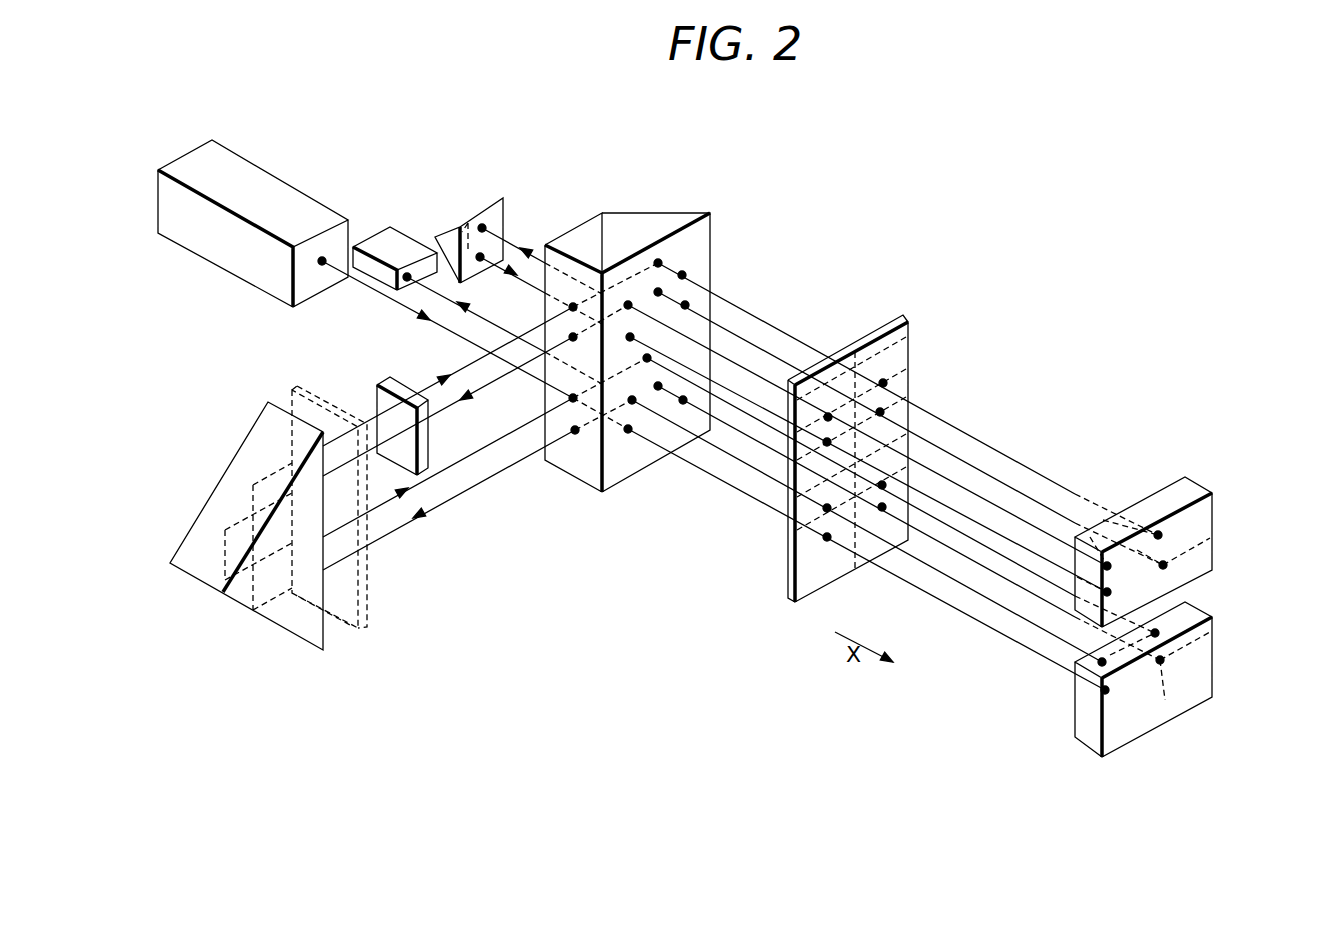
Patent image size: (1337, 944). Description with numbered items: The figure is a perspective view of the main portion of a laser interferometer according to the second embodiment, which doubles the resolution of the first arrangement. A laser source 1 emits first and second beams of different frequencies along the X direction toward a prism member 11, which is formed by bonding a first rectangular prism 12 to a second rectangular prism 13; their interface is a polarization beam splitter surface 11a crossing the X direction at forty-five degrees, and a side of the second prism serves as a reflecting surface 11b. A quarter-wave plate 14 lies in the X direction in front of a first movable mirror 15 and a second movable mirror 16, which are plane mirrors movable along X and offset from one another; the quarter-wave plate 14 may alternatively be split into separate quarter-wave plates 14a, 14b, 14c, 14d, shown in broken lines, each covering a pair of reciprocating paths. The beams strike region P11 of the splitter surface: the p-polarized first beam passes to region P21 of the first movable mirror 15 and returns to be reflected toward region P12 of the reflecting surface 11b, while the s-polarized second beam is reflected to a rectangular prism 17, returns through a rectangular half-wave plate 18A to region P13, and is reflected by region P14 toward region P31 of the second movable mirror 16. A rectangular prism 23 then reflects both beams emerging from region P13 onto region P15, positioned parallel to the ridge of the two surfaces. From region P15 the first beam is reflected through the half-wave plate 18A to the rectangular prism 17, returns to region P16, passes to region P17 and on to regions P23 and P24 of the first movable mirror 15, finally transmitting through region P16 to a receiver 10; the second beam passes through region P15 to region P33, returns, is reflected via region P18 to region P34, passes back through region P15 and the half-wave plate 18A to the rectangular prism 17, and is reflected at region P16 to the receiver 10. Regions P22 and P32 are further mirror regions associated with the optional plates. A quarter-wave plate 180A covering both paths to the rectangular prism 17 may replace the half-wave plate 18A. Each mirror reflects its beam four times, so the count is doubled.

The laser source 1 is at (248, 283).
The receiver 10 is at (393, 227).
The rectangular prism 23 is at (490, 207).
The prism member 11 is at (676, 337).
The first rectangular prism 12 is at (565, 250).
The second rectangular prism 13 is at (645, 230).
The polarization beam splitter surface 11a is at (602, 485).
The reflecting surface 11b is at (711, 237).
The λ/4 plate 14 is at (828, 480).
The λ/4 plate 14a is at (806, 578).
The λ/4 plate 14b is at (897, 473).
The λ/4 plate 14c is at (888, 352).
The λ/4 plate 14d is at (786, 478).
The first movable mirror 15 is at (1075, 737).
The second movable mirror 16 is at (1178, 481).
The rectangular prism 17 is at (270, 619).
The λ/2 plate 18A is at (377, 388).
The λ/4 plate 180A is at (362, 630).
The region of polarization beam splitter surface P11 is at (603, 416).
The region of reflecting surface P12 is at (606, 322).
The region of polarization beam splitter surface P13 is at (600, 290).
The region of reflecting surface P14 is at (662, 262).
The region of polarization beam splitter surface P15 is at (572, 341).
The region of polarization beam splitter surface P16 is at (572, 402).
The region of reflecting surface P17 is at (689, 305).
The region of reflecting surface P18 is at (686, 275).
The region of first movable mirror P21 is at (1101, 691).
The region of first movable mirror P22 is at (1160, 664).
The region of first movable mirror P23 is at (1159, 633).
The region of first movable mirror P24 is at (1098, 663).
The region of second movable mirror P31 is at (1158, 531).
The region of second movable mirror P32 is at (1107, 562).
The region of second movable mirror P33 is at (1106, 588).
The region of second movable mirror P34 is at (1166, 564).